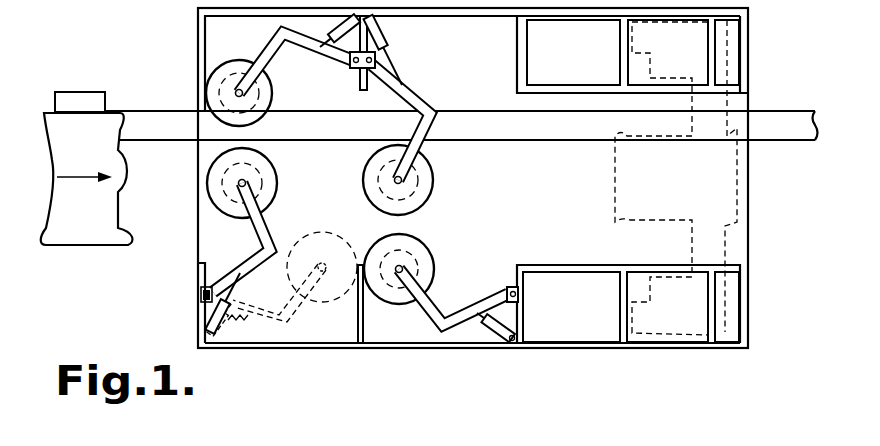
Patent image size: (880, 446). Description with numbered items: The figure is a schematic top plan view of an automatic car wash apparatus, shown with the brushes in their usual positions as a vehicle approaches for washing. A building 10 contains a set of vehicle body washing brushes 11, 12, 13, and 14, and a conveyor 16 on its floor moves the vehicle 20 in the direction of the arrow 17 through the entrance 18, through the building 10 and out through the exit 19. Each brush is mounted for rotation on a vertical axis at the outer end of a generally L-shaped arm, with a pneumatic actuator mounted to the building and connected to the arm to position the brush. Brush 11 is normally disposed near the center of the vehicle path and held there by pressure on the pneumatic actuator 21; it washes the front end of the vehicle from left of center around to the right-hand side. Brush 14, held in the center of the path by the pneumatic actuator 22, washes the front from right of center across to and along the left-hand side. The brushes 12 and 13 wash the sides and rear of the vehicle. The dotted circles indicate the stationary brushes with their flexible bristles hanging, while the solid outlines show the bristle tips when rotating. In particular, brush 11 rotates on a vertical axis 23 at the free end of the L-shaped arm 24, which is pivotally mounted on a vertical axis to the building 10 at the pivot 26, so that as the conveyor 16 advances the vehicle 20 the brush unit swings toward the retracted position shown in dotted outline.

The building 10 is at (464, 350).
The vehicle body washing brush 11 is at (272, 174).
The vehicle body washing brush 12 is at (270, 93).
The vehicle body washing brush 13 is at (383, 247).
The vehicle body washing brush 14 is at (430, 181).
The conveyor 16 is at (165, 118).
The arrow 17 is at (73, 177).
The entrance 18 is at (200, 265).
The exit 19 is at (738, 265).
The vehicle 20 is at (64, 255).
The pneumatic actuator 21 is at (212, 313).
The pneumatic actuator 22 is at (388, 30).
The vertical axis 23 is at (240, 186).
The L-shaped arm 24 is at (268, 222).
The pivot 26 is at (204, 297).